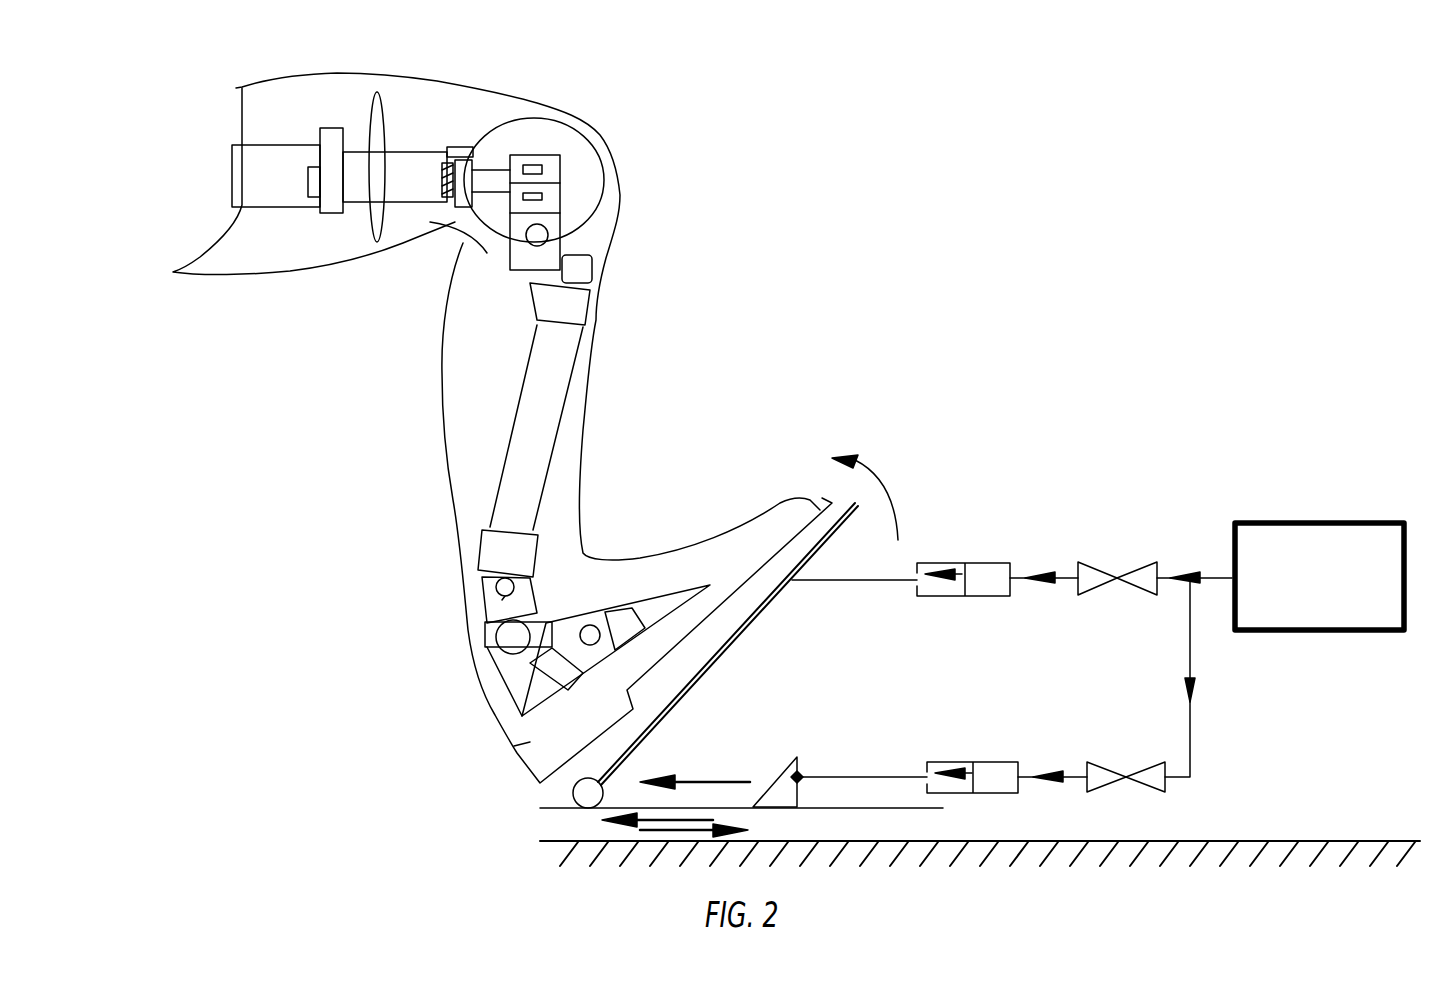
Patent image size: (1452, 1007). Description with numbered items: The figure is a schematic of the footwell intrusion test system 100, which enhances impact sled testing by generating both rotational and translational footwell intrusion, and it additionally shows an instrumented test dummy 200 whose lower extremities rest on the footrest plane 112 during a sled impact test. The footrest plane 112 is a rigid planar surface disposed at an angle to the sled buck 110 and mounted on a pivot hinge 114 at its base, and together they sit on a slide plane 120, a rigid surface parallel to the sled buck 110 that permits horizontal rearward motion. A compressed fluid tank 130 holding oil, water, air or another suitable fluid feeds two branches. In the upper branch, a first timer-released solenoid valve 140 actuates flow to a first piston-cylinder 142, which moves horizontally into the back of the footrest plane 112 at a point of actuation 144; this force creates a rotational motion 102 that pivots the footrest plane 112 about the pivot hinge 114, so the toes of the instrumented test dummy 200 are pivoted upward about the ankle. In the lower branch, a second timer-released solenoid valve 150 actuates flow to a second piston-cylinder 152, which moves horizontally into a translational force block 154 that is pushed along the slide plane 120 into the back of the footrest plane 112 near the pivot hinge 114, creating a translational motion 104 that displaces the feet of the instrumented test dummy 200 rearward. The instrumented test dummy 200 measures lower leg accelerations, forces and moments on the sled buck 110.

The footwell intrusion test system 100 is at (1042, 450).
The rotational motion 102 is at (935, 463).
The translational motion 104 is at (694, 765).
The sled buck 110 is at (1073, 852).
The footrest plane 112 is at (667, 712).
The pivot hinge 114 is at (562, 803).
The slide plane 120 is at (583, 827).
The compressed fluid tank 130 is at (1388, 542).
The first timer-released solenoid valve 140 is at (1143, 575).
The first piston-cylinder 142 is at (983, 580).
The point of actuation 144 is at (800, 582).
The second timer-released solenoid valve 150 is at (1157, 767).
The second piston-cylinder 152 is at (997, 770).
The translational force block 154 is at (797, 762).
The instrumented test dummy 200 is at (578, 415).